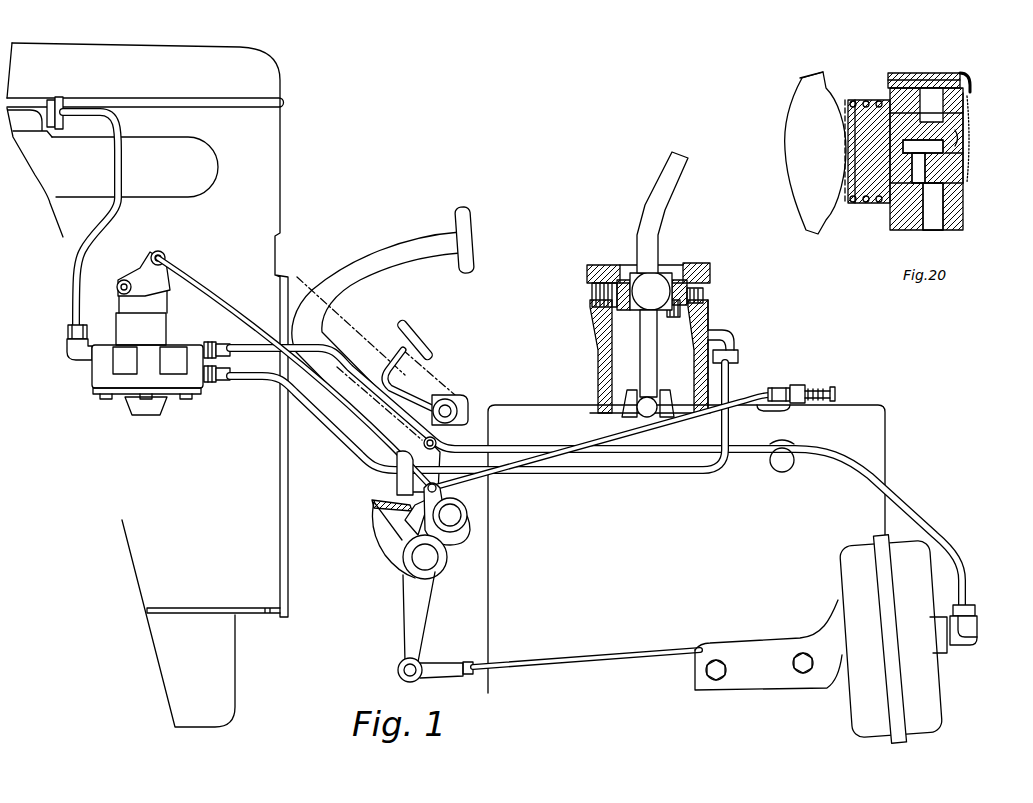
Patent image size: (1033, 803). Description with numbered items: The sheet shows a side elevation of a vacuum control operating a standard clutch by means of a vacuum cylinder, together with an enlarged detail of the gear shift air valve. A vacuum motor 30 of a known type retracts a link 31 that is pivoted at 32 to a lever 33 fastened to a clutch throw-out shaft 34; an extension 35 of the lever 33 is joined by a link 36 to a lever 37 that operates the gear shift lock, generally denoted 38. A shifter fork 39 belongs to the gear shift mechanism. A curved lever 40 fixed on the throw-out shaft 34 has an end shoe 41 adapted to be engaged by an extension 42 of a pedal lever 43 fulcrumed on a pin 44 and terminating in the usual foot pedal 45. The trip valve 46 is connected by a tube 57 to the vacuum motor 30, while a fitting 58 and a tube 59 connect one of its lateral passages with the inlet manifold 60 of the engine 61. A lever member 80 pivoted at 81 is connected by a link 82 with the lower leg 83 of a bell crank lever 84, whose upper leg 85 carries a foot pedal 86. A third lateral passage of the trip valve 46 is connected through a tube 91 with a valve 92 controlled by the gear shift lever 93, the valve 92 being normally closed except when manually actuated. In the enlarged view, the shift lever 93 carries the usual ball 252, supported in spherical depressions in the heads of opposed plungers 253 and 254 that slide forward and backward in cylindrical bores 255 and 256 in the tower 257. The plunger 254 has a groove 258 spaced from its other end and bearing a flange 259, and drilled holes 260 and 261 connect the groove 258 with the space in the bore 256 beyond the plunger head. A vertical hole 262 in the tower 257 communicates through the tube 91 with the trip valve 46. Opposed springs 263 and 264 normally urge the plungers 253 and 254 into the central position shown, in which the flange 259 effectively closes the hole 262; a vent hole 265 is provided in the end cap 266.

In FIG. 1, the vacuum motor 30 is at (923, 667).
In FIG. 1, the link 31 is at (588, 662).
In FIG. 1, the pivot 32 is at (420, 662).
In FIG. 1, the lever 33 is at (422, 628).
In FIG. 1, the clutch throw-out shaft 34 is at (438, 557).
In FIG. 1, the extension 35 is at (416, 530).
In FIG. 1, the link 36 is at (490, 475).
In FIG. 1, the lever 37 is at (789, 386).
In FIG. 1, the gear shift lock 38 is at (776, 407).
In FIG. 1, the shifter fork 39 is at (628, 408).
In FIG. 1, the curved lever 40 is at (390, 528).
In FIG. 1, the end shoe 41 is at (372, 505).
In FIG. 1, the extension 42 is at (390, 484).
In FIG. 1, the pedal lever 43 is at (397, 428).
In FIG. 1, the pin 44 is at (457, 515).
In FIG. 1, the foot pedal 45 is at (470, 241).
In FIG. 1, the trip valve 46 is at (148, 347).
In FIG. 1, the tube 57 is at (233, 342).
In FIG. 1, the fitting 58 is at (72, 357).
In FIG. 1, the tube 59 is at (103, 223).
In FIG. 1, the inlet manifold 60 is at (197, 151).
In FIG. 1, the engine 61 is at (267, 184).
In FIG. 1, the lever member 80 is at (143, 268).
In FIG. 1, the pivot 81 is at (118, 289).
In FIG. 1, the link 82 is at (222, 302).
In FIG. 1, the lower leg 83 is at (438, 437).
In FIG. 1, the bell crank lever 84 is at (436, 396).
In FIG. 1, the upper leg 85 is at (383, 361).
In FIG. 1, the foot pedal 86 is at (413, 334).
In FIG. 1, the tube 91 is at (258, 380).
In FIG. 1, the valve 92 is at (709, 303).
In FIG. 20, the valve 92 is at (897, 222).
In FIG. 1, the gear shift lever 93 is at (659, 219).
In FIG. 20, the gear shift lever 93 is at (813, 85).
In FIG. 1, the ball 252 is at (653, 283).
In FIG. 20, the ball 252 is at (802, 137).
In FIG. 1, the plunger 253 is at (609, 270).
In FIG. 1, the plunger 254 is at (690, 290).
In FIG. 20, the plunger 254 is at (877, 203).
In FIG. 1, the cylindrical bore 255 is at (593, 294).
In FIG. 1, the cylindrical bore 256 is at (707, 300).
In FIG. 20, the cylindrical bore 256 is at (965, 128).
In FIG. 1, the tower 257 is at (595, 352).
In FIG. 20, the groove 258 is at (922, 78).
In FIG. 20, the flange 259 is at (955, 79).
In FIG. 20, the drilled hole 260 is at (925, 168).
In FIG. 20, the drilled hole 261 is at (930, 150).
In FIG. 1, the vertical hole 262 is at (709, 318).
In FIG. 20, the vertical hole 262 is at (935, 212).
In FIG. 1, the spring 263 is at (613, 307).
In FIG. 1, the spring 264 is at (675, 312).
In FIG. 20, the spring 264 is at (863, 102).
In FIG. 20, the vent hole 265 is at (968, 156).
In FIG. 20, the end cap 266 is at (963, 138).